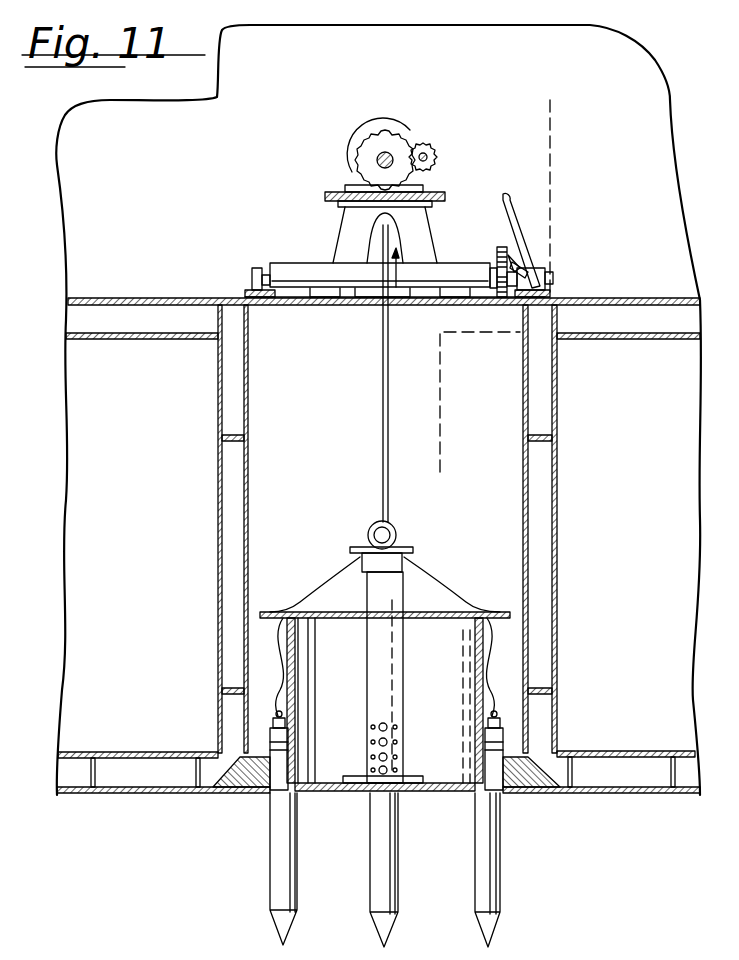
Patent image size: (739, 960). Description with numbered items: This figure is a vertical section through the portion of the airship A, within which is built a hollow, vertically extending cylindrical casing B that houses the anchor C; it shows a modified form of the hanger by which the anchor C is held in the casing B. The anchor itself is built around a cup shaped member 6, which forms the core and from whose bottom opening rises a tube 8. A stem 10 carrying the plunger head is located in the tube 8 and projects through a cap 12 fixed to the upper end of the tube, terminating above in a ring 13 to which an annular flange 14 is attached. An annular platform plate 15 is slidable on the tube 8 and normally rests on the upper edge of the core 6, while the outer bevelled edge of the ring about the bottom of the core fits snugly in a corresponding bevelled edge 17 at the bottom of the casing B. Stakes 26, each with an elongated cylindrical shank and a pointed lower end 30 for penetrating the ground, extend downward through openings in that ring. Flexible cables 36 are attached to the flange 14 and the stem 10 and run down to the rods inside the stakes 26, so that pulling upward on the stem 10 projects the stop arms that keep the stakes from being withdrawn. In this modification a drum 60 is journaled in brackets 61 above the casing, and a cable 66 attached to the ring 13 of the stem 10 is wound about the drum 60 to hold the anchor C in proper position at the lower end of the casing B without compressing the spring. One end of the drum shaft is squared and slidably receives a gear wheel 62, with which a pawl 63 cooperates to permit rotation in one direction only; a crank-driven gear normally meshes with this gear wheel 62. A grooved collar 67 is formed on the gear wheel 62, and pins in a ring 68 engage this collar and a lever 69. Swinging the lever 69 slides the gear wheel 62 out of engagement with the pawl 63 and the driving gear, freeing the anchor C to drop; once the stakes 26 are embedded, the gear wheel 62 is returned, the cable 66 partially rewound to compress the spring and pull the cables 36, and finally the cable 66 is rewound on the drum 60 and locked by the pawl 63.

The portion of the airship A is at (132, 340).
The casing B is at (219, 422).
The anchor C is at (234, 790).
The cup shaped member 6 is at (449, 790).
The tube 8 is at (388, 662).
The stem 10 is at (526, 793).
The cap 12 is at (353, 582).
The ring 13 is at (400, 531).
The annular flange 14 is at (413, 550).
The platform plate 15 is at (504, 610).
The bevelled edge 17 is at (547, 772).
The stakes 26 is at (480, 845).
The pointed end 30 is at (497, 923).
The cables 36 is at (438, 588).
The drum 60 is at (310, 270).
The brackets 61 is at (258, 268).
The gear wheel 62 is at (499, 258).
The pawl 63 is at (477, 301).
The cable 66 is at (382, 343).
The grooved collar 67 is at (514, 262).
The ring 68 is at (518, 262).
The lever 69 is at (518, 226).